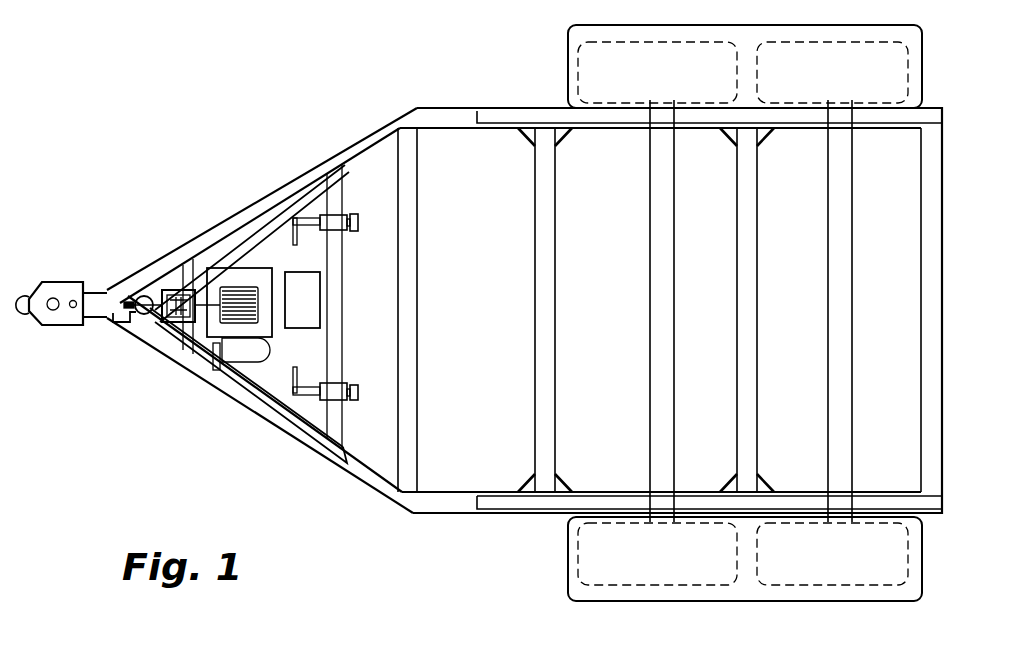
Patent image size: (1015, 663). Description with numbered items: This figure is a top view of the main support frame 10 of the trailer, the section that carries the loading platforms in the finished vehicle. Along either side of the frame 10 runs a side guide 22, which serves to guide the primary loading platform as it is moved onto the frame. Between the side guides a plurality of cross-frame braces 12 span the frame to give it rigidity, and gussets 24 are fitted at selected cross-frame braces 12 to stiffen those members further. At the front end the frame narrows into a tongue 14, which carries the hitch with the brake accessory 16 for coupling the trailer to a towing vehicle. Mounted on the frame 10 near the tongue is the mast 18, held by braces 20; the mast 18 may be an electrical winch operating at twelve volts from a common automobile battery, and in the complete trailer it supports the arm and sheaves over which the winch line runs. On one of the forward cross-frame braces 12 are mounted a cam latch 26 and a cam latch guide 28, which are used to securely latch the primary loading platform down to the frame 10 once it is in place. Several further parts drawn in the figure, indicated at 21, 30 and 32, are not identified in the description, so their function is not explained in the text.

The main support frame 10 is at (403, 524).
The cross-frame braces 12 is at (544, 321).
The tongue 14 is at (96, 318).
The hitch with brake accessory 16 is at (66, 327).
The mast 18 is at (172, 289).
The braces 20 is at (258, 378).
The latch 21 is at (128, 296).
The side guide 22 is at (548, 106).
The gussets 24 is at (561, 485).
The cam latch 26 is at (357, 222).
The cam latch guide 28 is at (338, 227).
The battery box 30 is at (243, 268).
The control box 32 is at (306, 272).